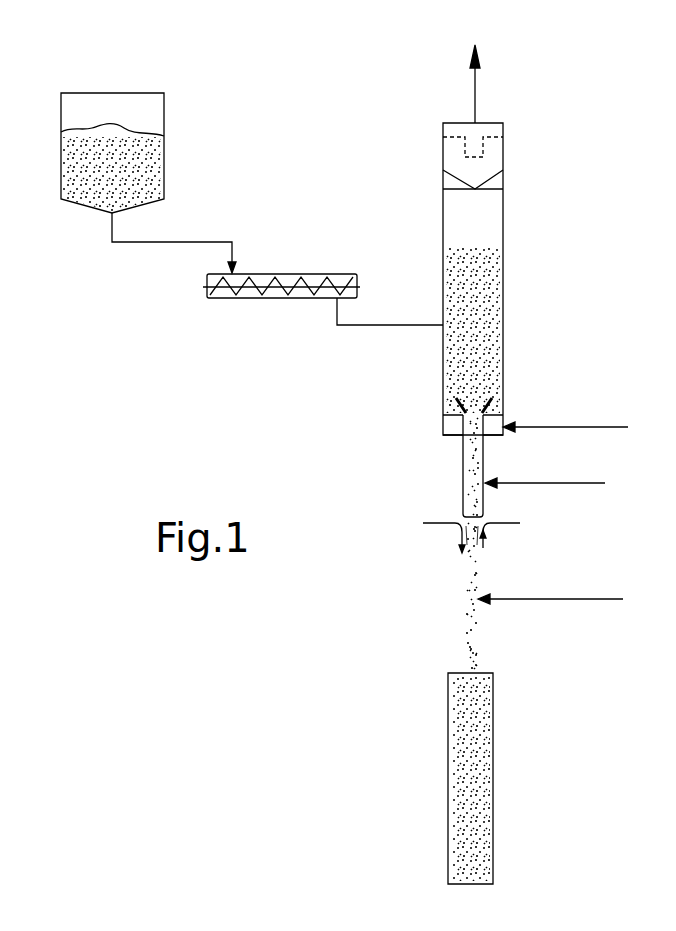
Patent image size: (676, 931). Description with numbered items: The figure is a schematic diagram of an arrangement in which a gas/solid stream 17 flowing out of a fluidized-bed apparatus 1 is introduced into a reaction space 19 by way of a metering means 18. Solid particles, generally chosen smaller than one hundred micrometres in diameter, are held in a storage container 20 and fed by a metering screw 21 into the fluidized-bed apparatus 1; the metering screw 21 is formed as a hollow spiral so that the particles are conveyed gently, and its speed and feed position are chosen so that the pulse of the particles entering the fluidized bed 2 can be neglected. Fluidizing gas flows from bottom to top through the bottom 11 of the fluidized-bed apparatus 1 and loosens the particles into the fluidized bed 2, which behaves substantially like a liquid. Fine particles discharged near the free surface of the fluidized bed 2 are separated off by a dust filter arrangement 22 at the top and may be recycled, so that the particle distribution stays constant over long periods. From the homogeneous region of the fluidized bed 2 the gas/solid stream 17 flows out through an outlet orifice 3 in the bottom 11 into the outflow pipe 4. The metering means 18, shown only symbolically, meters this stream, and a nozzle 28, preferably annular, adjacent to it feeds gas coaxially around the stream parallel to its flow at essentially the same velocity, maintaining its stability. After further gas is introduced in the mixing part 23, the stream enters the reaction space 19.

The fluidized-bed apparatus 1 is at (424, 176).
The fluidized bed 2 is at (490, 297).
The outlet orifice 3 is at (478, 388).
The outflow pipe 4 is at (453, 544).
The bottom 11 is at (490, 398).
The gas/solid stream 17 is at (470, 450).
The metering means 18 is at (486, 465).
The reaction space 19 is at (447, 787).
The storage container 20 is at (152, 117).
The metering screw 21 is at (331, 271).
The dust filter arrangement 22 is at (490, 163).
The mixing part 23 is at (456, 604).
The nozzle 28 is at (438, 517).